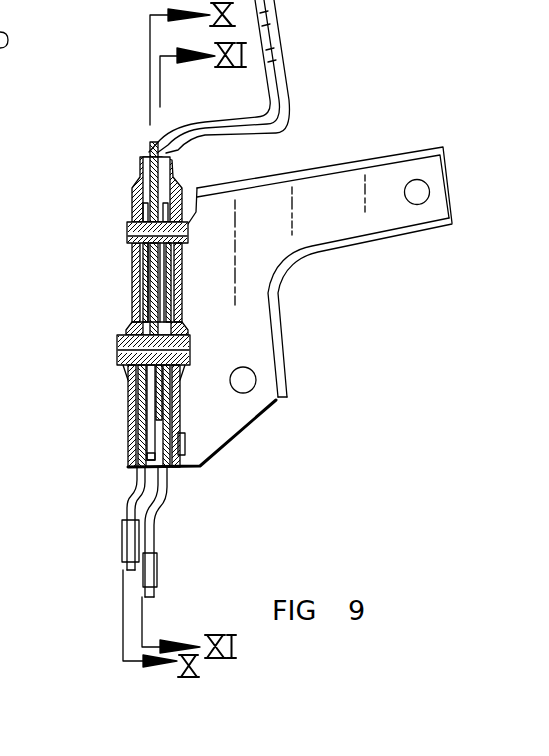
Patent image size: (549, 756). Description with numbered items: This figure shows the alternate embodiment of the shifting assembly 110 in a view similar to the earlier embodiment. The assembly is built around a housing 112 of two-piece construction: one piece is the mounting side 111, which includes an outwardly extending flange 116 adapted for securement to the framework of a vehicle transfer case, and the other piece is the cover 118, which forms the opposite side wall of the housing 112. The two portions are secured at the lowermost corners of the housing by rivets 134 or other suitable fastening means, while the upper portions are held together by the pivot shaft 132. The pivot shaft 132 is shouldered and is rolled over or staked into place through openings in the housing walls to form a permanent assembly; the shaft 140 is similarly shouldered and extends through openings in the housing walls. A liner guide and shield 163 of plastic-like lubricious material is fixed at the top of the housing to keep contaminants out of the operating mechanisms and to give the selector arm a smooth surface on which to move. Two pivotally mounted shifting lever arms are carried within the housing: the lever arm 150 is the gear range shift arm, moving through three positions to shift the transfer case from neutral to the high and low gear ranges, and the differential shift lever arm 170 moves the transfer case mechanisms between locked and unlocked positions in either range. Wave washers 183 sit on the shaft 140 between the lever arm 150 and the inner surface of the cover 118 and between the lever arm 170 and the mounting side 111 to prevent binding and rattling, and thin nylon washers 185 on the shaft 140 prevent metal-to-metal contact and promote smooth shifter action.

The shifting assembly 110 is at (330, 82).
The liner guide and shield 163 is at (165, 153).
The flange 116 is at (387, 183).
The cover 118 is at (135, 296).
The pivot shaft 132 is at (184, 238).
The mounting side 111 is at (177, 298).
The wave washers 183 is at (128, 325).
The shaft 140 is at (190, 350).
The housing 112 is at (128, 440).
The nylon washers 185 is at (148, 413).
The rivets 134 is at (181, 447).
The lever arm 150 is at (125, 506).
The differential shift lever arm 170 is at (168, 522).